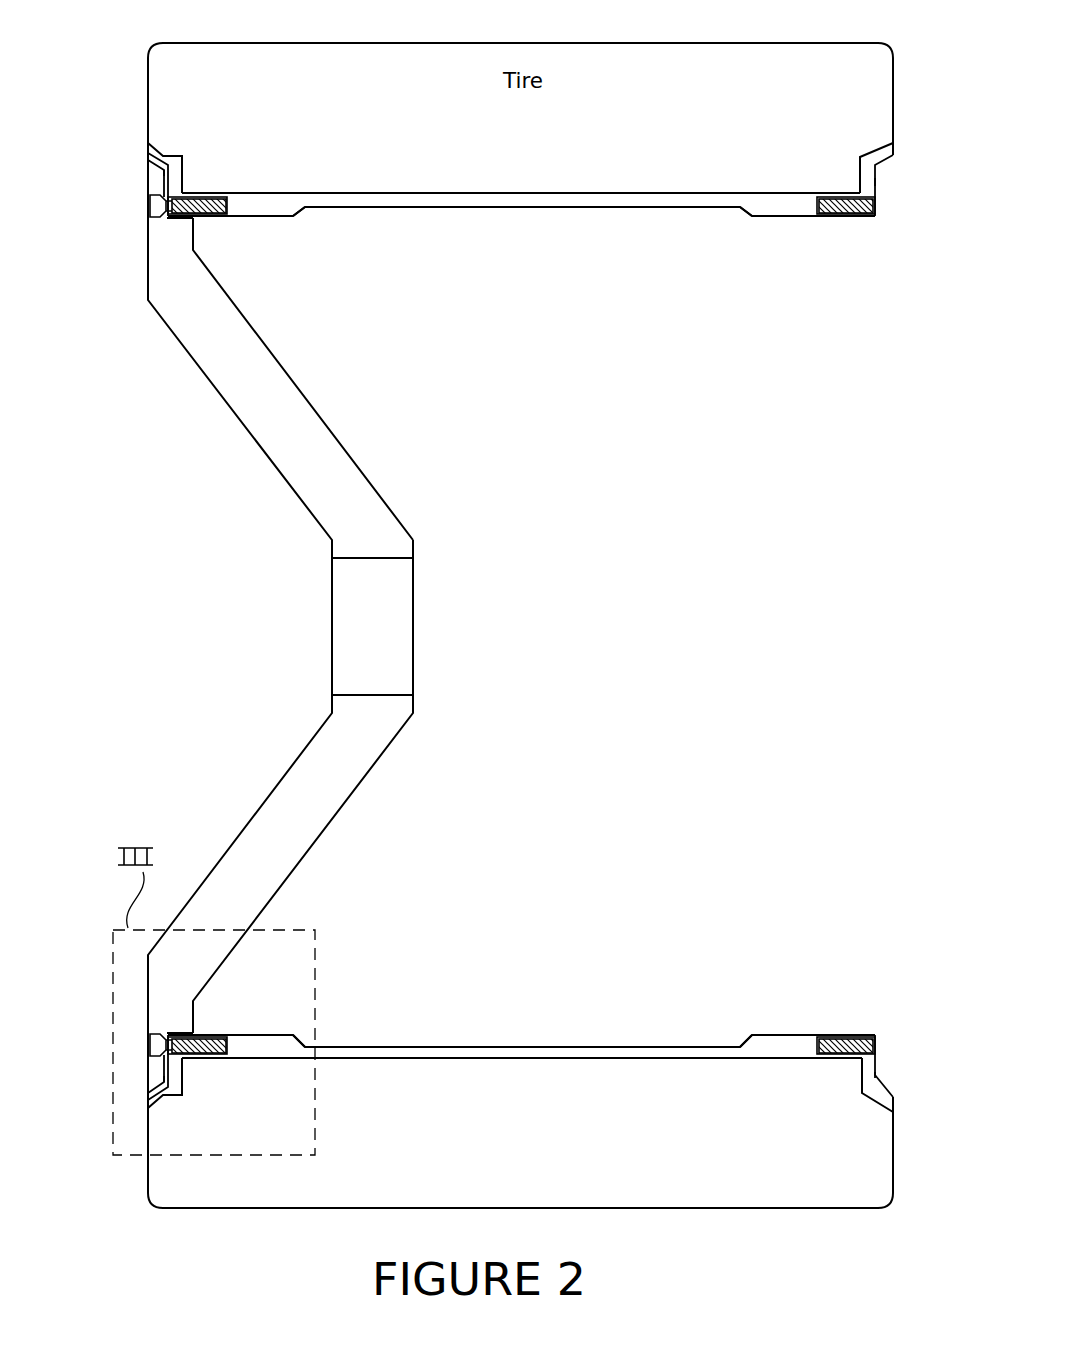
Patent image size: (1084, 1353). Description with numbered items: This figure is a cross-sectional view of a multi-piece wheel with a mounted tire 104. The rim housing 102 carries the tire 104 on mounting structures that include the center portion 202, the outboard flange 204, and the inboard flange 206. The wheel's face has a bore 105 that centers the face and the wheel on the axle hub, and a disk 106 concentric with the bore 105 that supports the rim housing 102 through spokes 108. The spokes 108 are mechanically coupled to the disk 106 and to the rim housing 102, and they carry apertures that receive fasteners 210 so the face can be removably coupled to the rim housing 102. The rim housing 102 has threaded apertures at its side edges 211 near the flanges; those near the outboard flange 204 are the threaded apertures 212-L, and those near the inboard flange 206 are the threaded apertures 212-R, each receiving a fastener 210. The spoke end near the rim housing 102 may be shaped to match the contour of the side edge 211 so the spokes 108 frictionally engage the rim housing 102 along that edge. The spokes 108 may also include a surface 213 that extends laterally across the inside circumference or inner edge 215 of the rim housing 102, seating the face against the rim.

The rim housing 102 is at (462, 209).
The tire 104 is at (245, 75).
The bore 105 is at (405, 590).
The disk 106 is at (325, 510).
The spokes 108 is at (320, 413).
The center portion 202 is at (578, 194).
The outboard flange 204 is at (160, 155).
The inboard flange 206 is at (875, 162).
The fasteners 210 is at (152, 207).
The side edges 211 is at (165, 172).
The threaded apertures proximate to the outboard flange 212-L is at (210, 214).
The threaded apertures proximate to the inboard flange 212-R is at (840, 214).
The surface 213 is at (190, 232).
The inner edge 215 is at (272, 218).